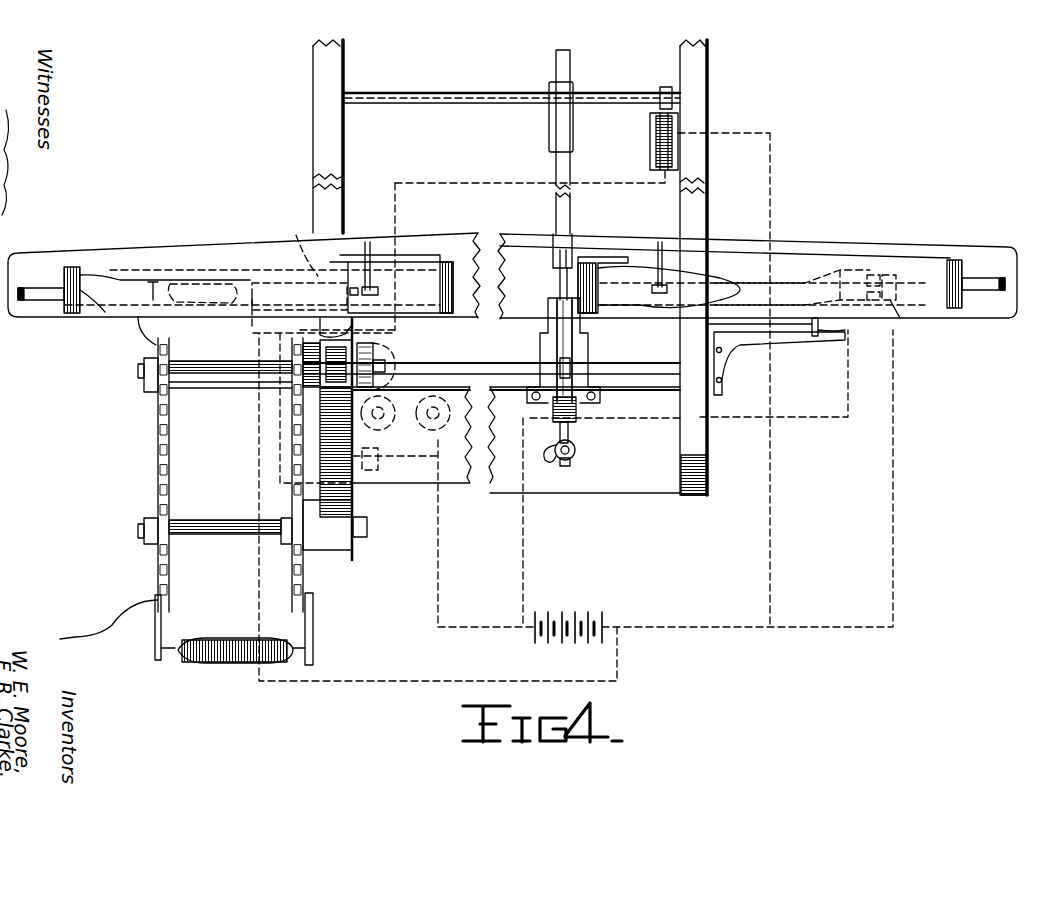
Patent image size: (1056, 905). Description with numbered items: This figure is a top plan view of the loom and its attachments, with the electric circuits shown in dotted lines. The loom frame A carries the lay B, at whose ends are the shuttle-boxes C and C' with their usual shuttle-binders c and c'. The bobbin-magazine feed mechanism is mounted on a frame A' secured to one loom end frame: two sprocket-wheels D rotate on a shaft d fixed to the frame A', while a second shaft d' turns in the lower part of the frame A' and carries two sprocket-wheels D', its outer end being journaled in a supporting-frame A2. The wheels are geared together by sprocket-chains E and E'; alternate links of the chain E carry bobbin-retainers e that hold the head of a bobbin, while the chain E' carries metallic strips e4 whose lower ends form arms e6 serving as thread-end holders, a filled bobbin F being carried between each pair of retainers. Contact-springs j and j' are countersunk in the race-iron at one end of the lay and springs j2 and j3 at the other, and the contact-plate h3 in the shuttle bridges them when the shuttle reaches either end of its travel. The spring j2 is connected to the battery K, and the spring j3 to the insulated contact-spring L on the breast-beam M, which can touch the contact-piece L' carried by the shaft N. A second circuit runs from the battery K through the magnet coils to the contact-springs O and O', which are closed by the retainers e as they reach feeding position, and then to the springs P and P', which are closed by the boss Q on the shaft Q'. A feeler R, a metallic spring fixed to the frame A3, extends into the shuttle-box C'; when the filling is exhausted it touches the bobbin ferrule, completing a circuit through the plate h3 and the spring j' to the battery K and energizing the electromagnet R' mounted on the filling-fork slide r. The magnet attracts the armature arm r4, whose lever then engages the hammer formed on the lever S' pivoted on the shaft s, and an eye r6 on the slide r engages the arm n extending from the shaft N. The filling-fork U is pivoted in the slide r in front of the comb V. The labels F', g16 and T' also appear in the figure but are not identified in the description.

The loom frame A is at (523, 267).
The magazine frame A' is at (284, 468).
The supporting-frame A2 is at (222, 390).
The feeler frame A3 is at (740, 348).
The lay B is at (205, 262).
The shuttle-box C is at (391, 257).
The shuttle-box C' is at (663, 258).
The shuttle-binder c is at (134, 263).
The shuttle-binder c' is at (960, 260).
The sprocket-wheels D is at (196, 558).
The sprocket-wheels D' is at (132, 381).
The shaft d is at (225, 553).
The second shaft d' is at (230, 350).
The sprocket-chain E is at (261, 475).
The sprocket-chain E' is at (138, 475).
The bobbin-retainer e is at (318, 333).
The metallic strip e4 is at (161, 636).
The thread-end holder arm e6 is at (100, 652).
The filled bobbin F is at (233, 671).
The plunger F' is at (792, 255).
The gear g16 is at (378, 360).
The contact-plate h3 is at (372, 280).
The contact-spring j is at (887, 253).
The contact-spring j' is at (915, 326).
The contact-spring j2 is at (299, 239).
The contact-spring j3 is at (299, 302).
The battery K is at (573, 407).
The contact-spring L is at (412, 458).
The contact-piece L' is at (396, 466).
The breast-beam M is at (625, 480).
The shaft N is at (480, 493).
The arm n is at (575, 454).
The contact-spring O is at (388, 434).
The contact-spring O' is at (286, 357).
The contact-spring P is at (639, 145).
The contact-spring P' is at (637, 141).
The boss Q is at (707, 81).
The shaft Q' is at (512, 78).
The feeler R is at (792, 335).
The electromagnet R' is at (588, 426).
The filling-fork slide r is at (580, 358).
The armature arm r4 is at (560, 364).
The eye r6 is at (553, 455).
The shaft s is at (628, 366).
The hammer lever S' is at (530, 250).
The disk T' is at (540, 142).
The filling-fork U is at (560, 283).
The comb V is at (573, 255).